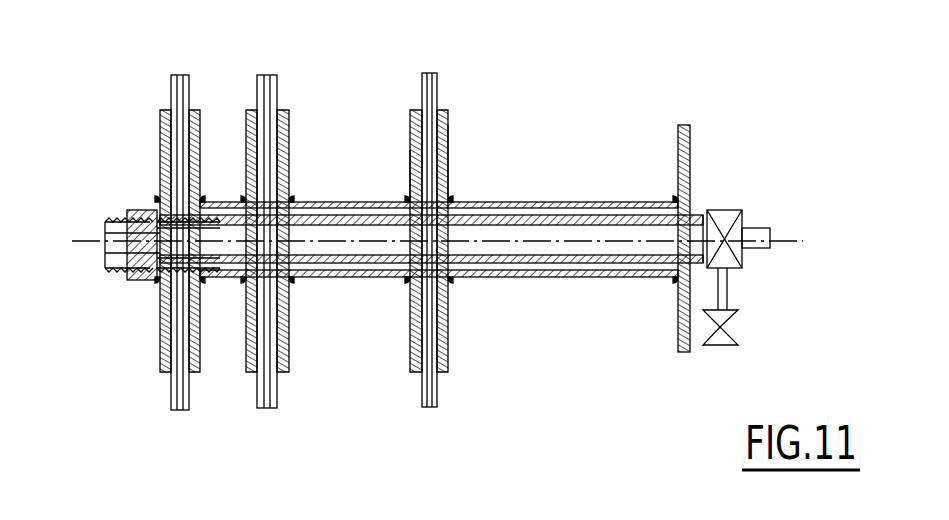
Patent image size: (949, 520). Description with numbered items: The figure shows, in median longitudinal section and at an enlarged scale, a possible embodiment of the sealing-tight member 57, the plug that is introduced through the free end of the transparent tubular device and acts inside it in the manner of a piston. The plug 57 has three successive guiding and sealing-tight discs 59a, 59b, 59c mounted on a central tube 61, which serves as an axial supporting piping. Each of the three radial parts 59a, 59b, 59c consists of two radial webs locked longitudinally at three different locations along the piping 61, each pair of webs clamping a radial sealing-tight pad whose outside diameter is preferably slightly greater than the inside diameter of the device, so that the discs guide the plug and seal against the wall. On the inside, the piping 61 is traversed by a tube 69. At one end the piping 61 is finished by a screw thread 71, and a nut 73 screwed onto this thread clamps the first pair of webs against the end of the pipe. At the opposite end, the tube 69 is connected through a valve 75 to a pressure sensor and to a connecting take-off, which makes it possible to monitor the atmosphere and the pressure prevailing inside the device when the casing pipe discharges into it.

The sealing-tight member 57 is at (336, 198).
The guiding and sealing-tight disc 59a is at (175, 416).
The guiding and sealing-tight disc 59b is at (288, 376).
The guiding and sealing-tight disc 59c is at (450, 376).
The central tube 61 is at (553, 202).
The tube 69 is at (604, 256).
The screw thread 71 is at (107, 257).
The nut 73 is at (132, 212).
The valve 75 is at (727, 211).